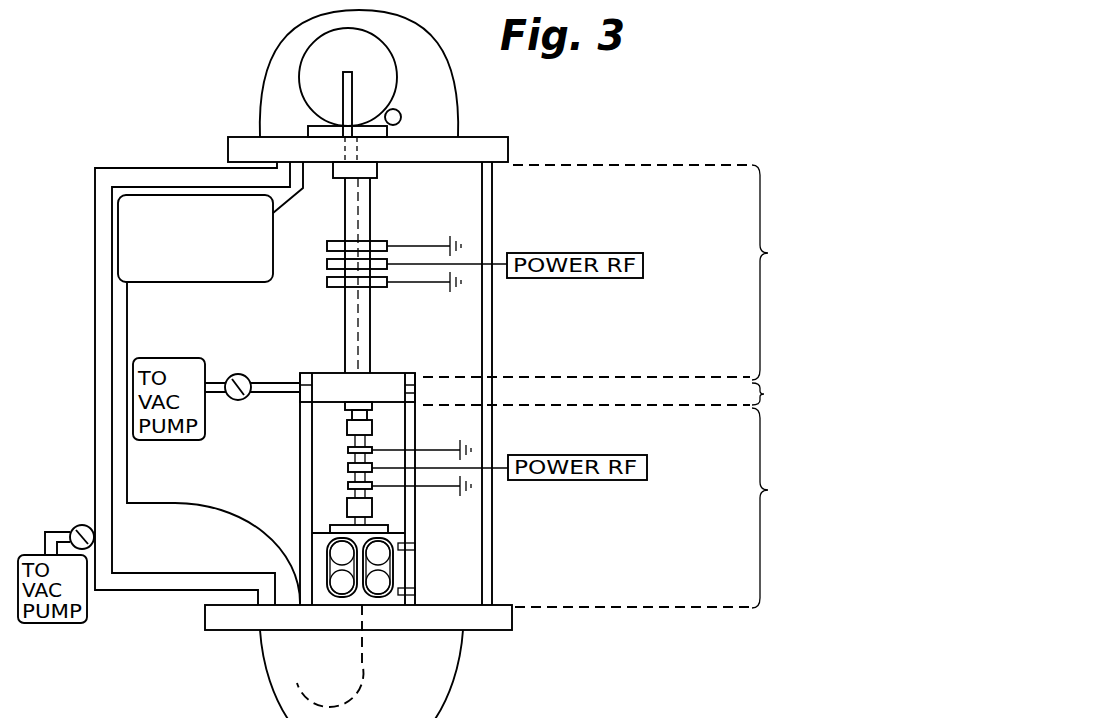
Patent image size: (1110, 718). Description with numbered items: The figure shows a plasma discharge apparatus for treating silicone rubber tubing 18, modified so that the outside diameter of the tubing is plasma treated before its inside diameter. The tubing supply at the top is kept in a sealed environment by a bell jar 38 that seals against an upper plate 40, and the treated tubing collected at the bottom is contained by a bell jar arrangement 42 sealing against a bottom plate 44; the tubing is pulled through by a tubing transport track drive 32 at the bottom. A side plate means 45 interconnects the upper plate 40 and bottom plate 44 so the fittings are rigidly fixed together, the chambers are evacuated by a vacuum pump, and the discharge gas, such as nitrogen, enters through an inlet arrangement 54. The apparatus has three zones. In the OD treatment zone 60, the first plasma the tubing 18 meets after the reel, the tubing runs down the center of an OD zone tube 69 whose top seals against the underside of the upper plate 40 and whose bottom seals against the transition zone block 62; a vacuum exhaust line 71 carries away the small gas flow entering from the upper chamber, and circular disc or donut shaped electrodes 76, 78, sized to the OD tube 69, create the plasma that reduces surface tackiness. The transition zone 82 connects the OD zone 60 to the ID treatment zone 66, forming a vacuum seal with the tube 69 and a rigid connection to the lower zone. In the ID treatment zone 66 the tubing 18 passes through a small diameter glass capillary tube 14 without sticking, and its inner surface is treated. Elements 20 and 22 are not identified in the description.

The capillary tube 14 is at (365, 442).
The tubing 18 is at (358, 193).
The electrode plates 20 is at (348, 450).
The substrate 22 is at (348, 468).
The tubing transport track drive 32 is at (403, 571).
The bell jar 38 is at (458, 124).
The upper plate 40 is at (237, 137).
The bell jar arrangement 42 is at (455, 697).
The bottom plate 44 is at (226, 630).
The side plate means 45 is at (492, 222).
The inlet arrangement 54 is at (234, 282).
The OD treatment zone 60 is at (659, 272).
The transition zone block 62 is at (383, 373).
The ID treatment zone 66 is at (655, 508).
The OD zone tube 69 is at (347, 205).
The vacuum exhaust line 71 is at (276, 383).
The ground electrodes 76 is at (383, 241).
The electrode 78 is at (327, 265).
The transition zone 82 is at (608, 391).